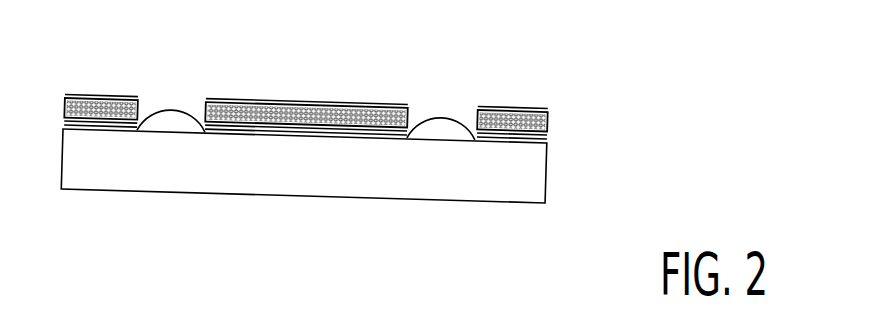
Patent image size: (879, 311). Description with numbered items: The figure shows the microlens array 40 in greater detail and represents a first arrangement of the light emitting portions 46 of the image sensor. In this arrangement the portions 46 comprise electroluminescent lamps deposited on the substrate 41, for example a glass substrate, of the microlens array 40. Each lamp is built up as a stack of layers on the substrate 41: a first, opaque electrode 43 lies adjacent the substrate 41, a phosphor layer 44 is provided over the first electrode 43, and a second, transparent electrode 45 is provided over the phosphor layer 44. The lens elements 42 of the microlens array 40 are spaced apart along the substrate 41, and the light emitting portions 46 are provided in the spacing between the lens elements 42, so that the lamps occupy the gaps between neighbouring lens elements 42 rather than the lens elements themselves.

The microlens array 40 is at (417, 213).
The substrate 41 is at (506, 188).
The lens elements 42 is at (165, 110).
The first, opaque electrode 43 is at (201, 102).
The phosphor layer 44 is at (93, 95).
The second, transparent electrode 45 is at (262, 100).
The light emitting portions 46 is at (285, 89).